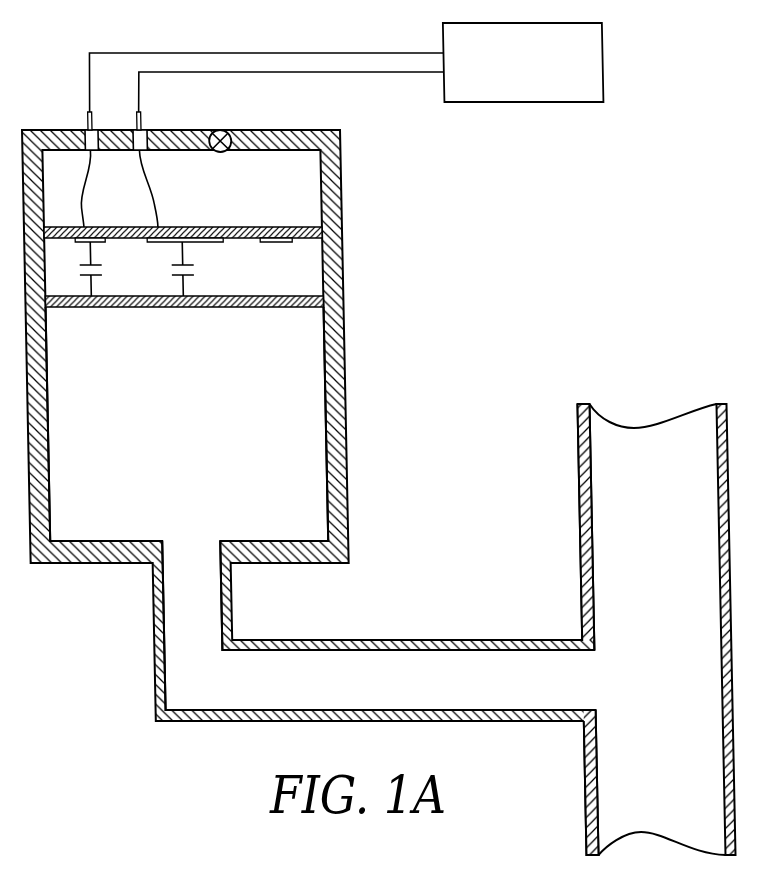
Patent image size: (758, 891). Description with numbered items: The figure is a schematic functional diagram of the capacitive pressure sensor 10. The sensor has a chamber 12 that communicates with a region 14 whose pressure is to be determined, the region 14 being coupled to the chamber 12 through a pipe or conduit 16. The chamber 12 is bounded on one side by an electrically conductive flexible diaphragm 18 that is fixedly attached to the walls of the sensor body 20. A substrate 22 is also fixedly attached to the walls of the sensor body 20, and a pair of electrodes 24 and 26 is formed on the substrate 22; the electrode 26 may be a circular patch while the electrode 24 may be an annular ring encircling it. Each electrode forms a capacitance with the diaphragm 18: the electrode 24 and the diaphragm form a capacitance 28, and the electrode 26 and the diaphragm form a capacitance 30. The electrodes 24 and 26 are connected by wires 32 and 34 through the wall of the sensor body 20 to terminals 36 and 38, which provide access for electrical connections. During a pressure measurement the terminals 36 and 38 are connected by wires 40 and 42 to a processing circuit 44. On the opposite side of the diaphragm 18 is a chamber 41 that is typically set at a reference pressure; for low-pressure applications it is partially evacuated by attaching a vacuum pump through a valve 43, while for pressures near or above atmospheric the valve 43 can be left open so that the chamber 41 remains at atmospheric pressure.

The capacitive pressure sensor 10 is at (378, 434).
The chamber 12 is at (105, 522).
The region 14 is at (672, 796).
The pipe or conduit 16 is at (412, 689).
The flexible diaphragm 18 is at (222, 308).
The sensor body 20 is at (341, 349).
The substrate 22 is at (244, 227).
The electrode 24 is at (74, 244).
The electrode 26 is at (220, 244).
The capacitance 28 is at (97, 269).
The capacitance 30 is at (190, 266).
The wire 32 is at (89, 180).
The wire 34 is at (175, 206).
The terminal 36 is at (87, 114).
The terminal 38 is at (136, 114).
The wire 40 is at (344, 52).
The chamber 41 is at (229, 206).
The wire 42 is at (367, 73).
The valve 43 is at (220, 129).
The processing circuit 44 is at (566, 102).